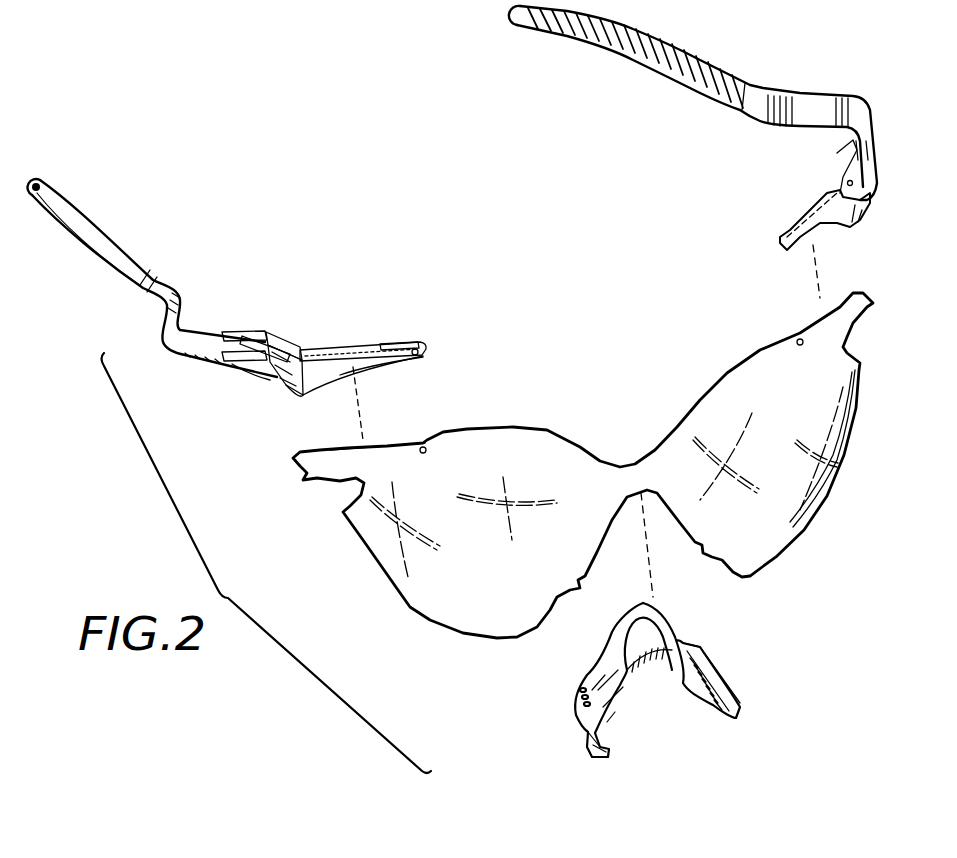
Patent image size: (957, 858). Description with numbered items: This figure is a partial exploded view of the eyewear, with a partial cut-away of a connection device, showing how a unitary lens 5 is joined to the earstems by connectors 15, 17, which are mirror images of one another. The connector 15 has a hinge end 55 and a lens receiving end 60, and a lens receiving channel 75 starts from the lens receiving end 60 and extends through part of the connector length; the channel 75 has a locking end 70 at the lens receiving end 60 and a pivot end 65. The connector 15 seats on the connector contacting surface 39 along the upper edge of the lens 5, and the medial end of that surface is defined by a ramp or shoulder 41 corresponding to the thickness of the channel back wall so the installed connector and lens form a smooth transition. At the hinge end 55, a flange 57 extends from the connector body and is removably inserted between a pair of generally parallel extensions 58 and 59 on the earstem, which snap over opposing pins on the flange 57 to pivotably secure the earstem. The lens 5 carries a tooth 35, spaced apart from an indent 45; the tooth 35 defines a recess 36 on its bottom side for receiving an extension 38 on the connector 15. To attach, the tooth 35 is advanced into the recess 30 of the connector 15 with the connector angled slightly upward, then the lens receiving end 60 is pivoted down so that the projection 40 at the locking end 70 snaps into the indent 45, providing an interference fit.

The unitary lens 5 is at (408, 620).
The connector 15 is at (361, 342).
The connector 17 is at (808, 206).
The recess 30 is at (317, 350).
The tooth 35 is at (298, 460).
The recess 36 is at (313, 476).
The extension 38 is at (278, 367).
The connector contacting surface 39 is at (385, 446).
The projection 40 is at (420, 352).
The shoulder 41 is at (440, 432).
The indent 45 is at (421, 445).
The hinge end 55 is at (288, 343).
The flange 57 is at (270, 330).
The extension 58 is at (250, 335).
The extension 59 is at (243, 370).
The lens receiving end 60 is at (391, 346).
The pivot end 65 is at (300, 394).
The locking end 70 is at (390, 360).
The lens receiving channel 75 is at (858, 215).